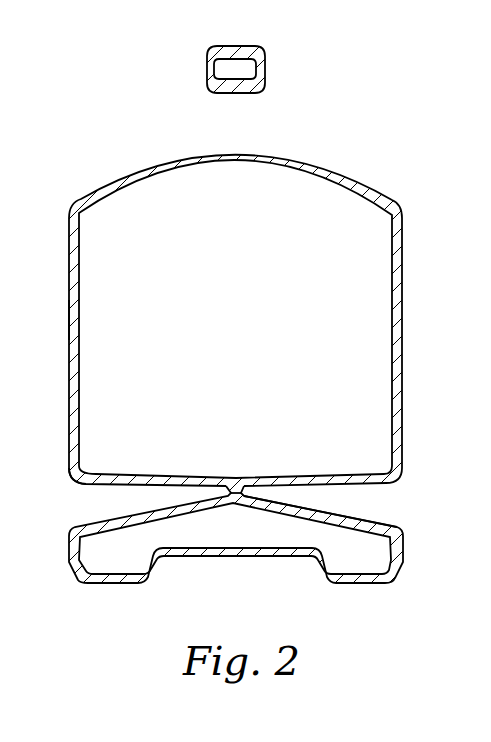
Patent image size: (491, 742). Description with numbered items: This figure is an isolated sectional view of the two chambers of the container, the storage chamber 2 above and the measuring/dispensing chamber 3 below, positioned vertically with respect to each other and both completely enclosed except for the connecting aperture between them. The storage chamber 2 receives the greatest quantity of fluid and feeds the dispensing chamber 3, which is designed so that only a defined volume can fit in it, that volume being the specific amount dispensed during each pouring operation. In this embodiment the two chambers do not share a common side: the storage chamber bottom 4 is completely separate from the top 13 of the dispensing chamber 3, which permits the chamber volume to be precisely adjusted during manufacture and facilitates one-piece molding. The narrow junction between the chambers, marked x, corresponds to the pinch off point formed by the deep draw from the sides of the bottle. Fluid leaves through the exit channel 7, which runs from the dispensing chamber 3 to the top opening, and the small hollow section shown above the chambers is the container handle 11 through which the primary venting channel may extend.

The storage chamber 2 is at (174, 375).
The measuring/dispensing chamber 3 is at (246, 536).
The storage chamber bottom 4 is at (96, 483).
The exit channel 7 is at (35, 320).
The container handle 11 is at (210, 52).
The top of dispensing chamber 13 is at (362, 519).
The junction x is at (238, 490).